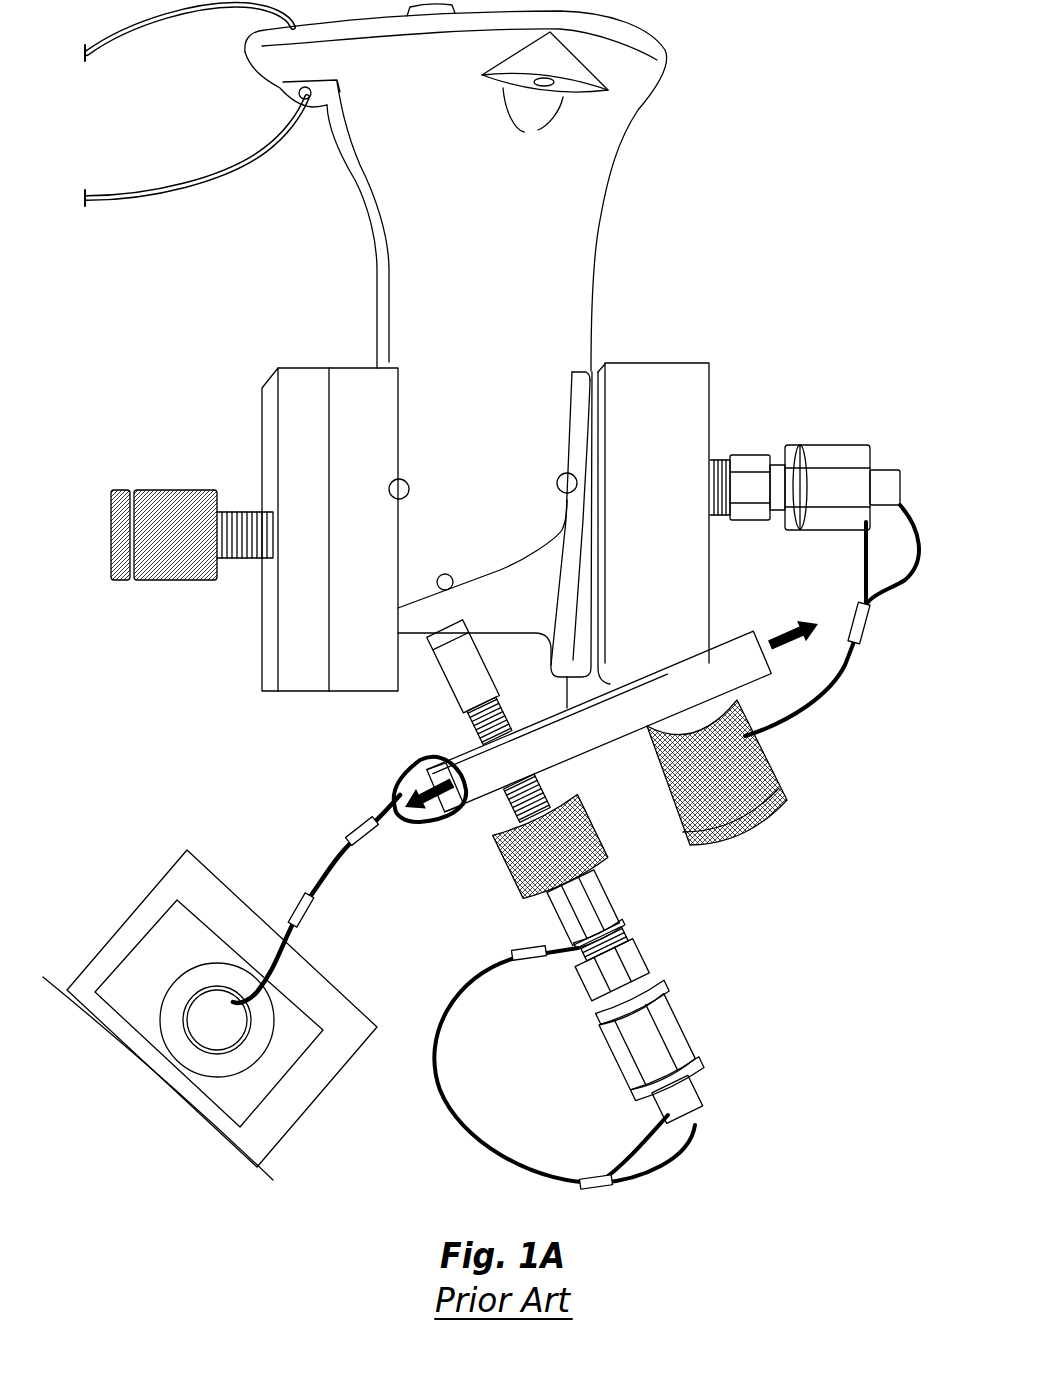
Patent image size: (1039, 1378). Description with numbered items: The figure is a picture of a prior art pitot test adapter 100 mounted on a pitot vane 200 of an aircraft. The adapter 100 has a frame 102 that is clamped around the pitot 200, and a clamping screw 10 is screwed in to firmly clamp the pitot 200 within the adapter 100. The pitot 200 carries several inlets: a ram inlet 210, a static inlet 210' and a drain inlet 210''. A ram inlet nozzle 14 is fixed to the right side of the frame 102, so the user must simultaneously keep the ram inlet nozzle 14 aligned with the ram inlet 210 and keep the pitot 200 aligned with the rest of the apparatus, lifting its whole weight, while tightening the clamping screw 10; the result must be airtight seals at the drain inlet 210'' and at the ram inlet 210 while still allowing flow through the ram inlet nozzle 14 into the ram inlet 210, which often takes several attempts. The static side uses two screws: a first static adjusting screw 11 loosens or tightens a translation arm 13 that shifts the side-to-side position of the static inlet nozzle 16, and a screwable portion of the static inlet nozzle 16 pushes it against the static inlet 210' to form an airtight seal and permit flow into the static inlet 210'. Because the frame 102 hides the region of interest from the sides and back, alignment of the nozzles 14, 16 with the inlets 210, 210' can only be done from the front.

The pitot vane 200 is at (694, 77).
The pitot test adapter 100 is at (703, 344).
The frame 102 is at (297, 385).
The clamping screw 10 is at (164, 495).
The ram inlet 210 is at (597, 371).
The static inlet 210' is at (300, 626).
The drain inlet 210'' is at (278, 562).
The ram inlet nozzle 14 is at (836, 458).
The translation arm 13 is at (600, 727).
The first static adjusting screw 11 is at (752, 828).
The static inlet nozzle 16 is at (680, 1037).